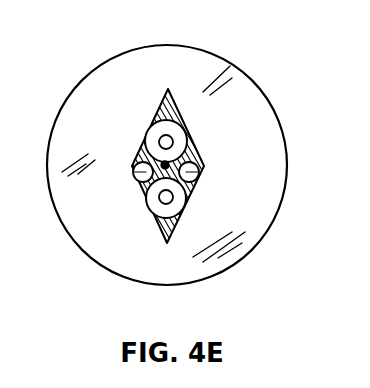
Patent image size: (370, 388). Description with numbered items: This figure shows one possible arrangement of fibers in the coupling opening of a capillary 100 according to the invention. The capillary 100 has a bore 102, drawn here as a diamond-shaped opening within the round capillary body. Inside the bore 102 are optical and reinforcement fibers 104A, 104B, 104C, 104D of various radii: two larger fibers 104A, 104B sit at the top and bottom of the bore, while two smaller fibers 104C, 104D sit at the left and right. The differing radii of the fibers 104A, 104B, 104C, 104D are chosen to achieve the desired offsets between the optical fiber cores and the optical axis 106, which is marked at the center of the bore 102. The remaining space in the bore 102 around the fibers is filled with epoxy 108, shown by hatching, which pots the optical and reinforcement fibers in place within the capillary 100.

The capillary 100 is at (92, 73).
The bore 102 is at (188, 88).
The optical fiber 104A is at (200, 136).
The optical fiber 104B is at (148, 200).
The reinforcement fiber 104C is at (134, 164).
The reinforcement fiber 104D is at (197, 184).
The optical axis 106 is at (199, 172).
The epoxy 108 is at (155, 92).